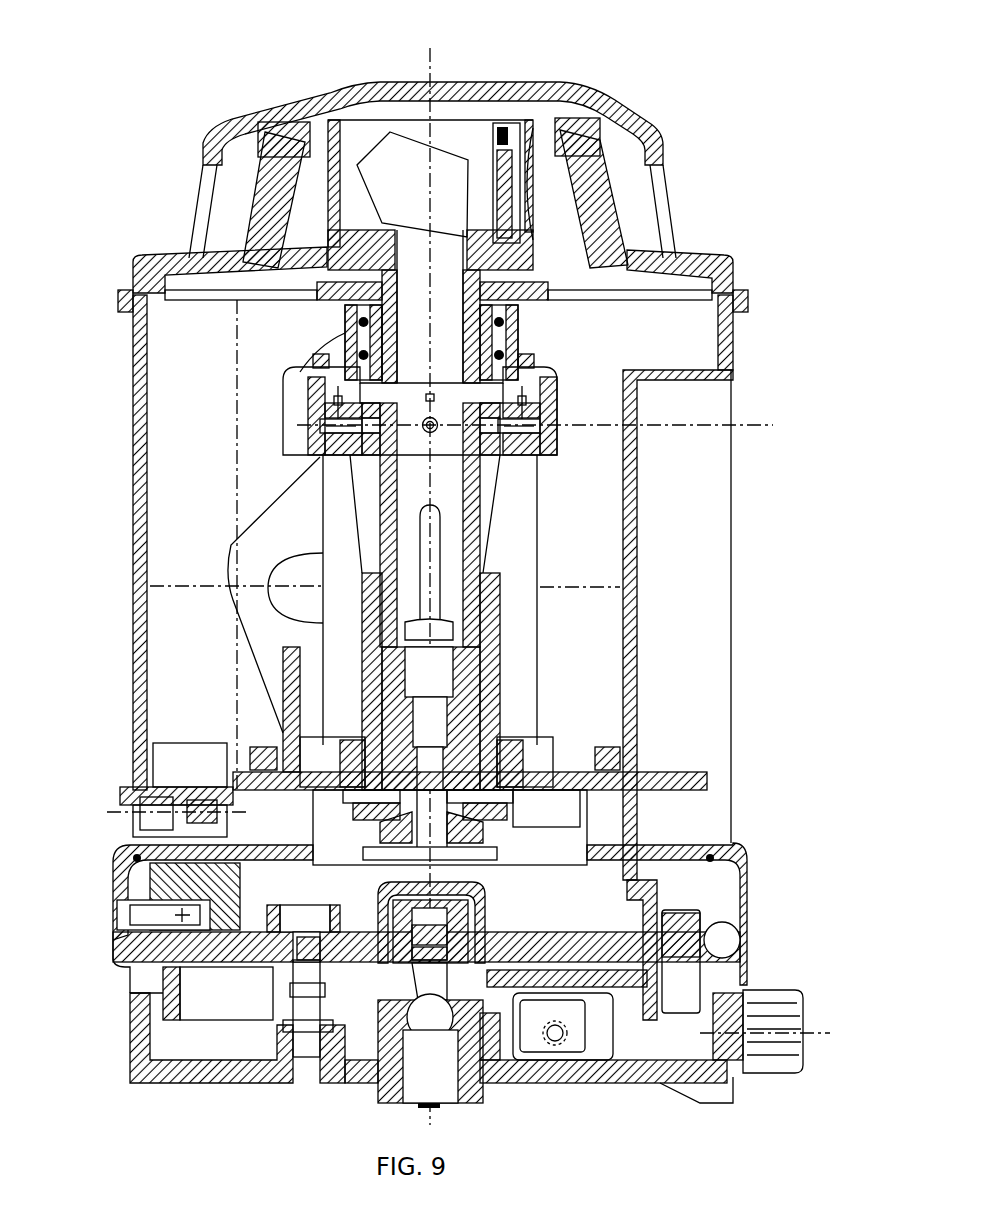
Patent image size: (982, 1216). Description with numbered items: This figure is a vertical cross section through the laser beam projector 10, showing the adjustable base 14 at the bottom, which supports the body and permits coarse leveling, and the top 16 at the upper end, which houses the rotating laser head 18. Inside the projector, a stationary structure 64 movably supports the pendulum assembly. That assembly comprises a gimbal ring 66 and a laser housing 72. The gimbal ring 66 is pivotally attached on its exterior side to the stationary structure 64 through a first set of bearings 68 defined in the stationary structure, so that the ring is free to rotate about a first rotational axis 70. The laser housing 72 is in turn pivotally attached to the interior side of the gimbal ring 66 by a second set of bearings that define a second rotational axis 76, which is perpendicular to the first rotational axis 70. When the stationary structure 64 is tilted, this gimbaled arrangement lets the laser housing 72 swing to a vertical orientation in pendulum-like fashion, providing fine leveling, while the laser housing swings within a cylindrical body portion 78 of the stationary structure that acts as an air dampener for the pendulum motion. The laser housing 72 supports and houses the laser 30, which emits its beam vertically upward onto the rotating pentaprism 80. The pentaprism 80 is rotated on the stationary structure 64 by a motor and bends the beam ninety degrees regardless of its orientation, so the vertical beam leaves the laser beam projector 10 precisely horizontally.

The laser beam projector 10 is at (670, 93).
The adjustable base 14 is at (747, 973).
The top 16 is at (270, 103).
The rotating laser head 18 is at (328, 192).
The laser 30 is at (503, 810).
The stationary structure 64 is at (557, 372).
The gimbal ring 66 is at (543, 459).
The first set of bearings 68 is at (320, 437).
The first rotational axis 70 is at (757, 423).
The laser housing 72 is at (455, 517).
The second rotational axis 76 is at (422, 422).
The cylindrical body portion 78 is at (362, 677).
The rotating pentaprism 80 is at (447, 167).